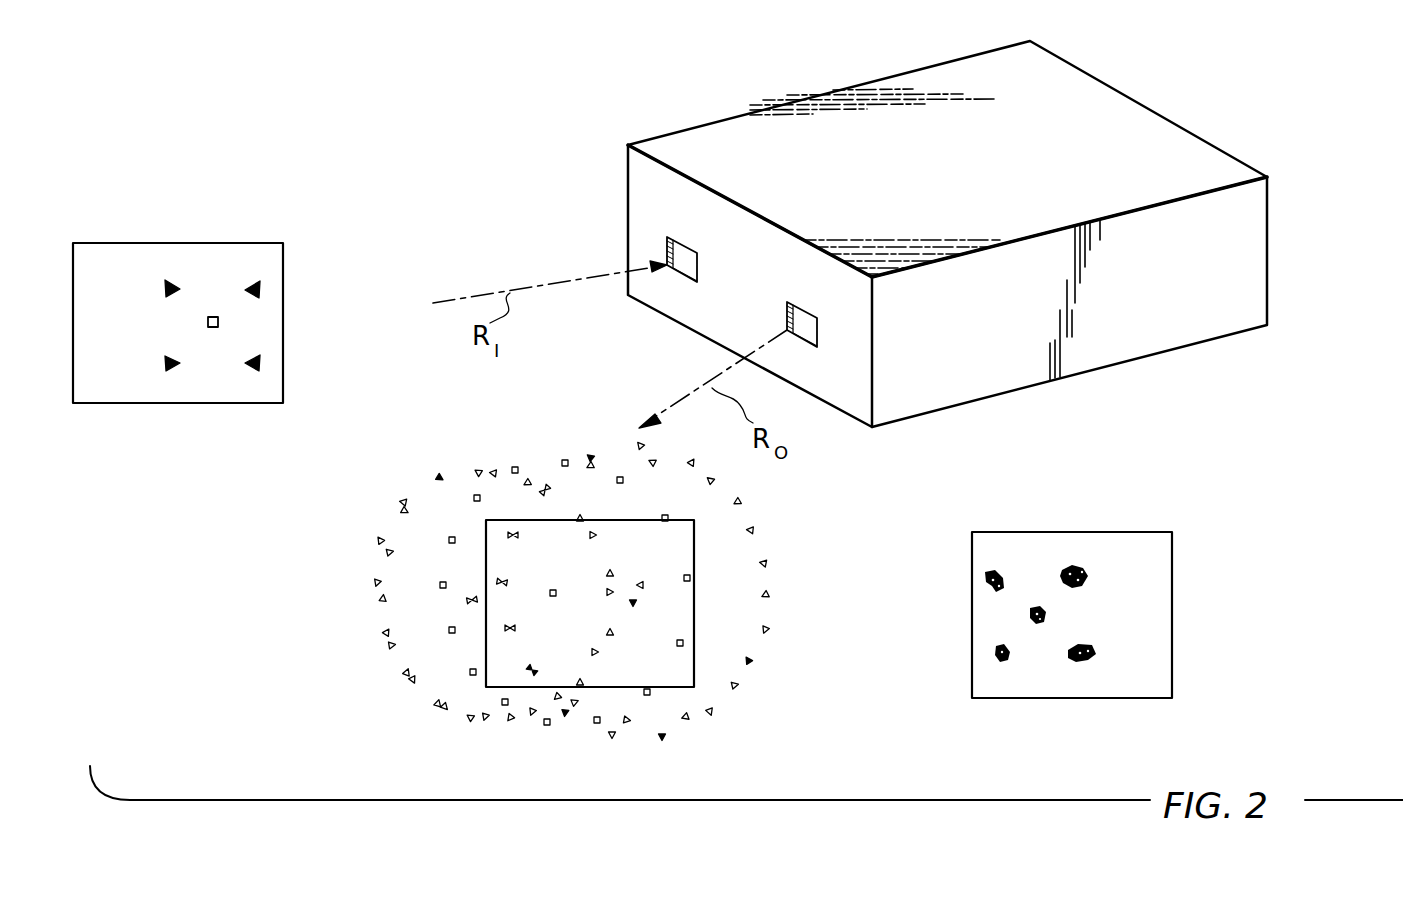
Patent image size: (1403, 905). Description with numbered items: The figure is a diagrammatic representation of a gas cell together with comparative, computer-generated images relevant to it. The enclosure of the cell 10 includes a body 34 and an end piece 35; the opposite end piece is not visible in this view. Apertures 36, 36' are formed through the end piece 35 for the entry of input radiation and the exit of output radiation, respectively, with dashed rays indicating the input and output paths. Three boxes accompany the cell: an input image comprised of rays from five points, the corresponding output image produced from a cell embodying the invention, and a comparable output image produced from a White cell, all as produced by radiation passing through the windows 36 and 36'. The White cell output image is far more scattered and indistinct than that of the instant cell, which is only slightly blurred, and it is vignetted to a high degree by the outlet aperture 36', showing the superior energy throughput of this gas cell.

The cell 10 is at (947, 234).
The body 34 is at (1217, 290).
The end piece 35 is at (633, 190).
The aperture 36 is at (448, 312).
The aperture 36' is at (811, 530).